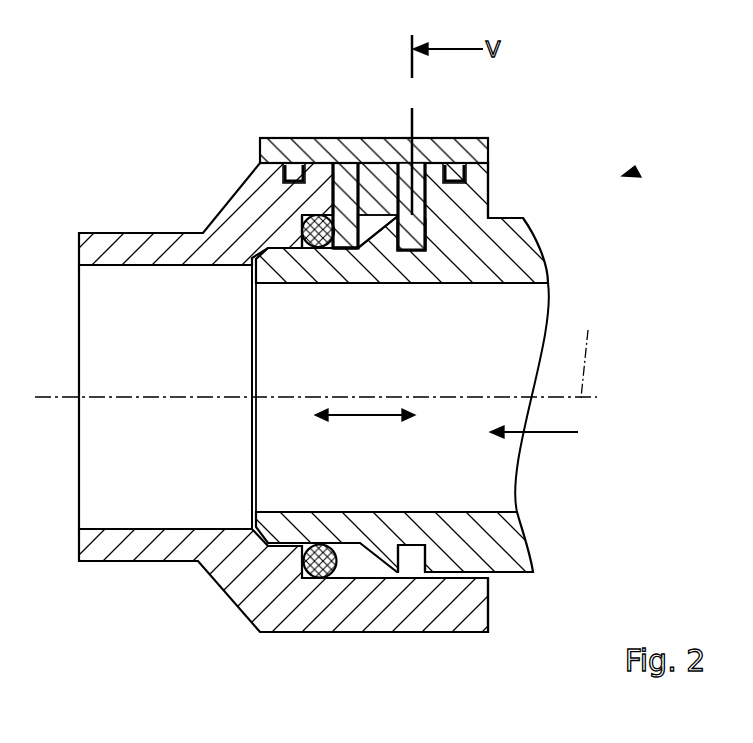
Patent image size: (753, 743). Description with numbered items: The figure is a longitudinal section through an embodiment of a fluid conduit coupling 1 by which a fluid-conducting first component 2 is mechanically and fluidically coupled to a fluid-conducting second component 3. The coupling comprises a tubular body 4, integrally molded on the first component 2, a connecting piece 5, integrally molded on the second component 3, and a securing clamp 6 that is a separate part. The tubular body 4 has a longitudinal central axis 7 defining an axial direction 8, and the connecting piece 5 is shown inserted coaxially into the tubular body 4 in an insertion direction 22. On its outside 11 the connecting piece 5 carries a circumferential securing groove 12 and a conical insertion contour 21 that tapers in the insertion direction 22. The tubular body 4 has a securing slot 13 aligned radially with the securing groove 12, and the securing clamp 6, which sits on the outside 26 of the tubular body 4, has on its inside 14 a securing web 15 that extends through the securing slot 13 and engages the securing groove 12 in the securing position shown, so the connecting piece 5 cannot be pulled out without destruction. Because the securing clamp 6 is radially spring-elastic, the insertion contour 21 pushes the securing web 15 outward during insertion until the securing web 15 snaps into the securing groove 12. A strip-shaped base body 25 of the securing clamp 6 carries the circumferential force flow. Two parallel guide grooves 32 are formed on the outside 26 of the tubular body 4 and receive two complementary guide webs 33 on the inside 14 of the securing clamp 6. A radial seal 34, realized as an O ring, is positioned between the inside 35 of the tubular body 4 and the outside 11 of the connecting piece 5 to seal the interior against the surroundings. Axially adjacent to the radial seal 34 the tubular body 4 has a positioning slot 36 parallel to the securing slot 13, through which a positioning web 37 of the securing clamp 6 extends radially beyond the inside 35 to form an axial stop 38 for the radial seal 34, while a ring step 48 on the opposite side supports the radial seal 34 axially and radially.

The fluid conduit coupling 1 is at (627, 171).
The first component 2 is at (123, 234).
The second component 3 is at (543, 258).
The connecting piece 5 is at (468, 367).
The tubular body 4 is at (490, 600).
The securing clamp 6 is at (385, 140).
The longitudinal central axis 7 is at (587, 349).
The axial direction 8 is at (367, 420).
The outside of the connecting piece 11 is at (520, 217).
The securing groove 12 is at (415, 253).
The securing slot 13 is at (409, 161).
The inside of the securing clamp 14 is at (492, 163).
The securing web 15 is at (388, 255).
The insertion contour 21 is at (363, 580).
The insertion direction 22 is at (552, 435).
The base body 25 is at (363, 175).
The outside of the tubular body 26 is at (150, 231).
The guide groove 32 is at (291, 185).
The guide web 33 is at (292, 175).
The radial seal 34 is at (321, 544).
The inside of the tubular body 35 is at (372, 236).
The positioning slot 36 is at (345, 180).
The positioning web 37 is at (345, 251).
The axial stop 38 is at (318, 248).
The ring step 48 is at (304, 230).